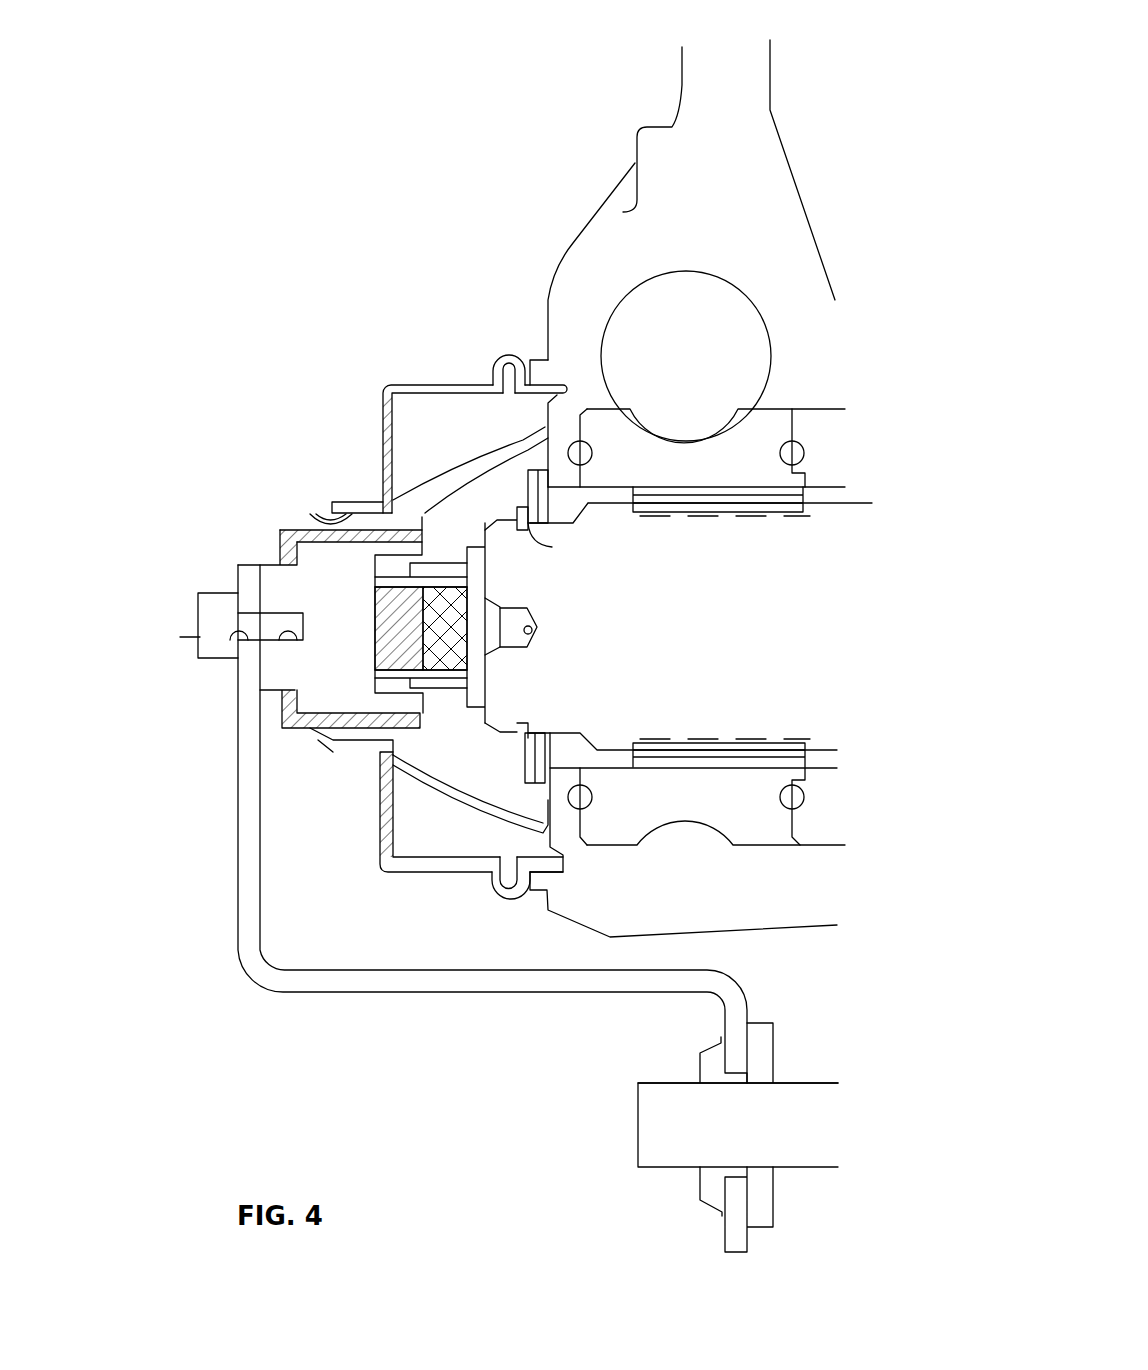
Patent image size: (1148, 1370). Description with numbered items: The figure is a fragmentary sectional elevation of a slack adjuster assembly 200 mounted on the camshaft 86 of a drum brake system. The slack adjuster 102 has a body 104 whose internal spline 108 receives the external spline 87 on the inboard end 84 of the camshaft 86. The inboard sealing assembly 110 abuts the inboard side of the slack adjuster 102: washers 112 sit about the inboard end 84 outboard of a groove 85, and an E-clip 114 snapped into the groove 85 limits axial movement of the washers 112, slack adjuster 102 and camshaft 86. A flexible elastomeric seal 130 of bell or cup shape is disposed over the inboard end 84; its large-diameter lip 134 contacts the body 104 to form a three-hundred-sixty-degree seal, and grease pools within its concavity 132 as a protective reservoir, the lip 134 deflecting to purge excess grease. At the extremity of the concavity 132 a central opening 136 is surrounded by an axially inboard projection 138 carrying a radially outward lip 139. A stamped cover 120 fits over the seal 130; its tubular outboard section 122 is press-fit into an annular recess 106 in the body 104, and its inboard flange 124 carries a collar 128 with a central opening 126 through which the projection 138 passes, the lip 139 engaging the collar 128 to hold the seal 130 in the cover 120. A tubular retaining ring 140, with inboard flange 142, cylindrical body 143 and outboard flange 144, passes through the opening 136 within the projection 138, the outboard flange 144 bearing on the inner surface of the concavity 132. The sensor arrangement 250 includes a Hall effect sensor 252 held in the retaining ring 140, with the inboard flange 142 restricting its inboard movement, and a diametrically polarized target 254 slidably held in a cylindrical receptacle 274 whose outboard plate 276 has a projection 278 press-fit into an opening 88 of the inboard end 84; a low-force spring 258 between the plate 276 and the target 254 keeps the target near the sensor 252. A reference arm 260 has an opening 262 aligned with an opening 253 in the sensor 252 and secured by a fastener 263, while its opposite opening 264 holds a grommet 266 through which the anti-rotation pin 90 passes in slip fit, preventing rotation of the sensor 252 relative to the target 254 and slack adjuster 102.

The slack adjuster assembly 200 is at (333, 267).
The slack adjuster 102 is at (812, 192).
The body 104 is at (573, 243).
The annular recess 106 is at (557, 398).
The internal spline 108 is at (730, 745).
The inboard sealing assembly 110 is at (335, 410).
The washers 112 is at (552, 547).
The E-clip 114 is at (520, 503).
The cover 120 is at (385, 385).
The outboard section 122 is at (445, 385).
The inboard flange 124 is at (378, 833).
The central opening 126 is at (313, 518).
The collar 128 is at (350, 500).
The seal 130 is at (437, 797).
The concavity 132 is at (503, 790).
The lip 134 is at (530, 432).
The central opening 136 is at (280, 530).
The projection 138 is at (363, 742).
The lip 139 is at (323, 754).
The retaining ring 140 is at (294, 733).
The inboard flange 142 is at (279, 707).
The cylindrical body 143 is at (375, 505).
The outboard flange 144 is at (457, 752).
The sensor arrangement 250 is at (438, 545).
The Hall effect sensor 252 is at (270, 563).
The opening 253 is at (300, 641).
The target 254 is at (380, 575).
The spring 258 is at (463, 663).
The reference arm 260 is at (234, 855).
The opening 262 is at (233, 628).
The fastener 263 is at (205, 637).
The opening 264 is at (733, 1180).
The grommet 266 is at (773, 1038).
The receptacle 274 is at (445, 690).
The outboard plate 276 is at (487, 707).
The projection 278 is at (512, 611).
The inboard end 84 is at (563, 510).
The groove 85 is at (500, 528).
The camshaft 86 is at (820, 491).
The external spline 87 is at (597, 752).
The opening 88 is at (537, 640).
The anti-rotation pin 90 is at (812, 1083).